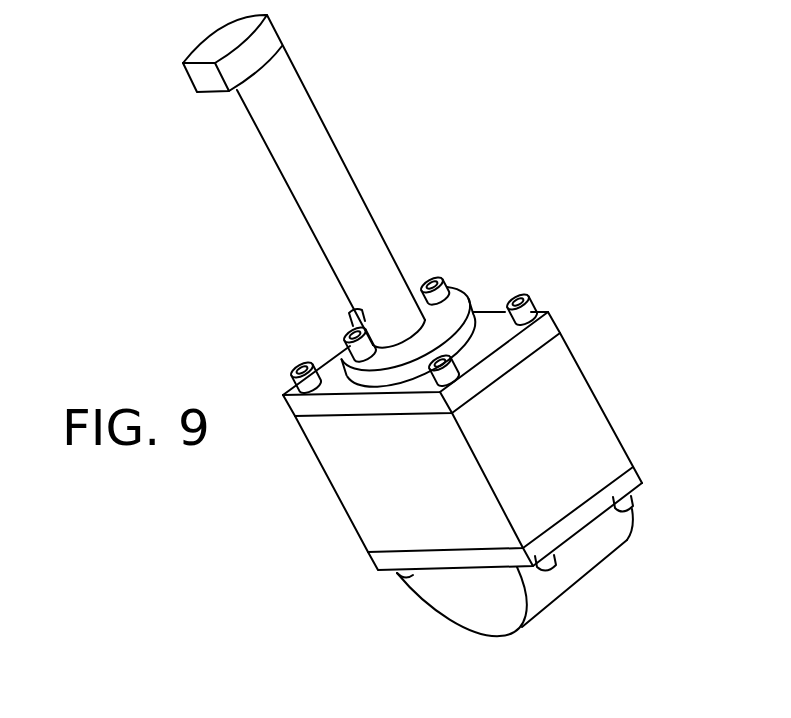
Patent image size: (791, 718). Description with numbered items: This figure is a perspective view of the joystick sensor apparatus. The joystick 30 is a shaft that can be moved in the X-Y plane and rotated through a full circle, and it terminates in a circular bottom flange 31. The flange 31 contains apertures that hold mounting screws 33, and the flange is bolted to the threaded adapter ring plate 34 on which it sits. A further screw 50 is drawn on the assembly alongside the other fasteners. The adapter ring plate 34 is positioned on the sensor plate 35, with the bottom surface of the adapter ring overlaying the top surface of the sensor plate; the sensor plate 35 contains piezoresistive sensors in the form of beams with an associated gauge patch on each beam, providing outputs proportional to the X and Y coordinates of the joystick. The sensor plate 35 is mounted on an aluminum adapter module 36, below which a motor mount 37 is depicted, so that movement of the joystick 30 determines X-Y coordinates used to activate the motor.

The joystick 30 is at (357, 195).
The bottom flange 31 is at (457, 305).
The mounting screws 33 is at (452, 302).
The threaded adapter ring plate 34 is at (357, 378).
The bolt 50 is at (527, 298).
The sensor plate 35 is at (547, 316).
The aluminum adapter module 36 is at (590, 433).
The motor mount 37 is at (437, 597).